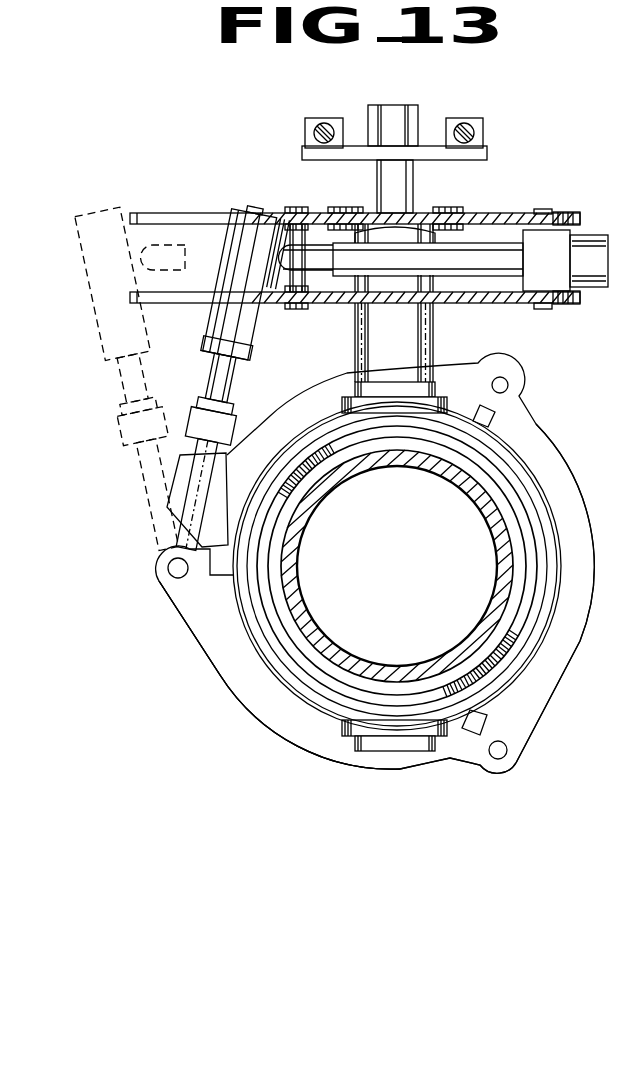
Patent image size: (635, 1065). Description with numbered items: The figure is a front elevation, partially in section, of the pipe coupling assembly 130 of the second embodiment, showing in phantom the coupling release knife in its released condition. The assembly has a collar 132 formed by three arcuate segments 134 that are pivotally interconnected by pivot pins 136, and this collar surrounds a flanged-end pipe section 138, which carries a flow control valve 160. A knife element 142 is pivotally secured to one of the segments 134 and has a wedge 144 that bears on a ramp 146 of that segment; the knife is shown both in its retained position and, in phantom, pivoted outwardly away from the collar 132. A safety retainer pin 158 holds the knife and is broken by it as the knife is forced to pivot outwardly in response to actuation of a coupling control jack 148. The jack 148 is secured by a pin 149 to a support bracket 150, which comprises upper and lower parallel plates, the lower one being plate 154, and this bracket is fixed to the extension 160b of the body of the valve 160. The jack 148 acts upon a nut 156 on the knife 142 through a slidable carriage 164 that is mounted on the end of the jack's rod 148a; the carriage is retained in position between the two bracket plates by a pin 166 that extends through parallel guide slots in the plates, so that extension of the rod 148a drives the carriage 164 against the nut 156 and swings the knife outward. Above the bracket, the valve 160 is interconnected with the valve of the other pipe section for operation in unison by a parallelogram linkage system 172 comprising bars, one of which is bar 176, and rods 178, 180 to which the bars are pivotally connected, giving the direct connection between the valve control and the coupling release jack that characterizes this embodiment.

The pipe coupling assembly 130 is at (228, 691).
The collar 132 is at (266, 722).
The arcuate segments 134 is at (300, 388).
The pivot pins 136 is at (508, 385).
The flanged-end pipe section 138 is at (497, 562).
The knife element 142 is at (240, 207).
The wedge 144 is at (193, 437).
The ramp 146 is at (192, 444).
The coupling control jack 148 is at (592, 238).
The jack rod 148a is at (491, 277).
The pin 149 is at (556, 226).
The support bracket 150 is at (484, 210).
The lower plate 154 is at (530, 212).
The nut 156 is at (210, 322).
The safety retainer pin 158 is at (182, 475).
The flow control valve 160 is at (250, 618).
The extension of the valve body 160b is at (392, 385).
The slidable carriage 164 is at (165, 243).
The pin 166 is at (290, 208).
The parallelogram linkage system 172 is at (488, 118).
The bar 176 is at (488, 152).
The rod 178 is at (323, 124).
The rod 180 is at (464, 124).